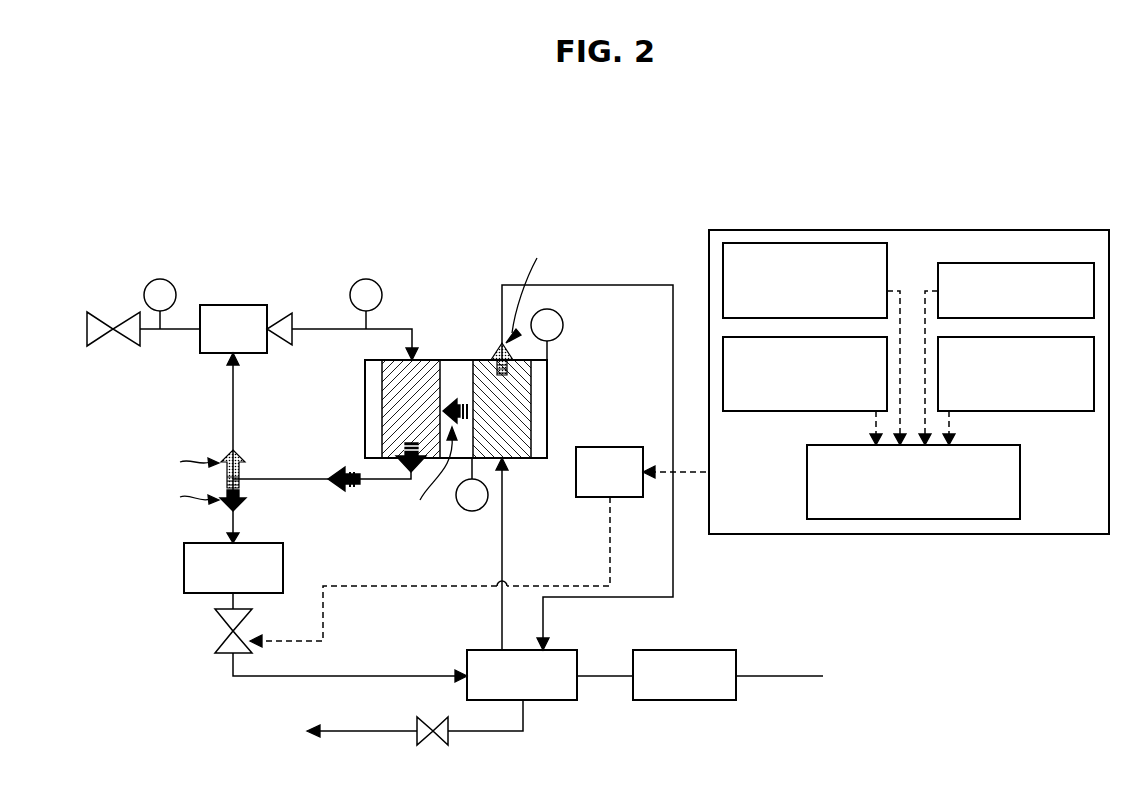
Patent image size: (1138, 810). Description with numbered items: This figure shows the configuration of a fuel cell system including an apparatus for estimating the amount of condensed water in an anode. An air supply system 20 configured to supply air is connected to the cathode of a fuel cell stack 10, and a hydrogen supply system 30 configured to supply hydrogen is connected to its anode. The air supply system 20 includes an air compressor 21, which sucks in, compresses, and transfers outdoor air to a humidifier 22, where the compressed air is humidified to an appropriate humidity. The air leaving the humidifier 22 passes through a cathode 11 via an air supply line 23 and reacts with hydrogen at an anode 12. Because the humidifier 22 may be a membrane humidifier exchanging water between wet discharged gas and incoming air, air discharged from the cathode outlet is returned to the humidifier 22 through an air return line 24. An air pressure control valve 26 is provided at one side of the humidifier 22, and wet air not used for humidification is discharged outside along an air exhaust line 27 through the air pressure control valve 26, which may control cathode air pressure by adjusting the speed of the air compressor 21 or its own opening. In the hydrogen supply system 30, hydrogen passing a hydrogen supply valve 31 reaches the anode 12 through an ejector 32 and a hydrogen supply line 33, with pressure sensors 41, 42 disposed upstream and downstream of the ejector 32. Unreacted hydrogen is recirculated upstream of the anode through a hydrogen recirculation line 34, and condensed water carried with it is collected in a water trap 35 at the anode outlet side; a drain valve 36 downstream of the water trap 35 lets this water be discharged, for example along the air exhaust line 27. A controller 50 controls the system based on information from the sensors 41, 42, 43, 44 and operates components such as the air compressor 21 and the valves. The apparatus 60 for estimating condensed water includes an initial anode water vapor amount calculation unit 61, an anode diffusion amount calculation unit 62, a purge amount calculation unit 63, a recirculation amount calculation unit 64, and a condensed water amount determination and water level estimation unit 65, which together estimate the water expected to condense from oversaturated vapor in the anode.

The fuel cell stack 10 is at (472, 378).
The cathode 11 is at (480, 367).
The anode 12 is at (420, 367).
The air supply system 20 is at (600, 682).
The air compressor 21 is at (680, 700).
The humidifier 22 is at (466, 655).
The air supply line 23 is at (508, 509).
The air return line 24 is at (650, 285).
The air pressure control valve 26 is at (440, 746).
The air exhaust line 27 is at (362, 732).
The hydrogen supply system 30 is at (177, 323).
The hydrogen supply valve 31 is at (104, 312).
The ejector 32 is at (211, 354).
The hydrogen supply line 33 is at (310, 329).
The hydrogen recirculation line 34 is at (233, 436).
The water trap 35 is at (184, 569).
The drain valve 36 is at (218, 654).
The pressure sensor 41 is at (160, 279).
The pressure sensor 42 is at (366, 279).
The sensor 43 is at (563, 326).
The sensor 44 is at (476, 511).
The controller 50 is at (610, 447).
The apparatus for estimating the amount of condensed water in the anode 60 is at (909, 374).
The initial anode water vapor amount calculation unit 61 is at (800, 243).
The anode diffusion amount calculation unit 62 is at (778, 411).
The purge amount calculation unit 63 is at (1025, 263).
The recirculation amount calculation unit 64 is at (1050, 411).
The condensed water amount determination and water level estimation unit 65 is at (911, 519).